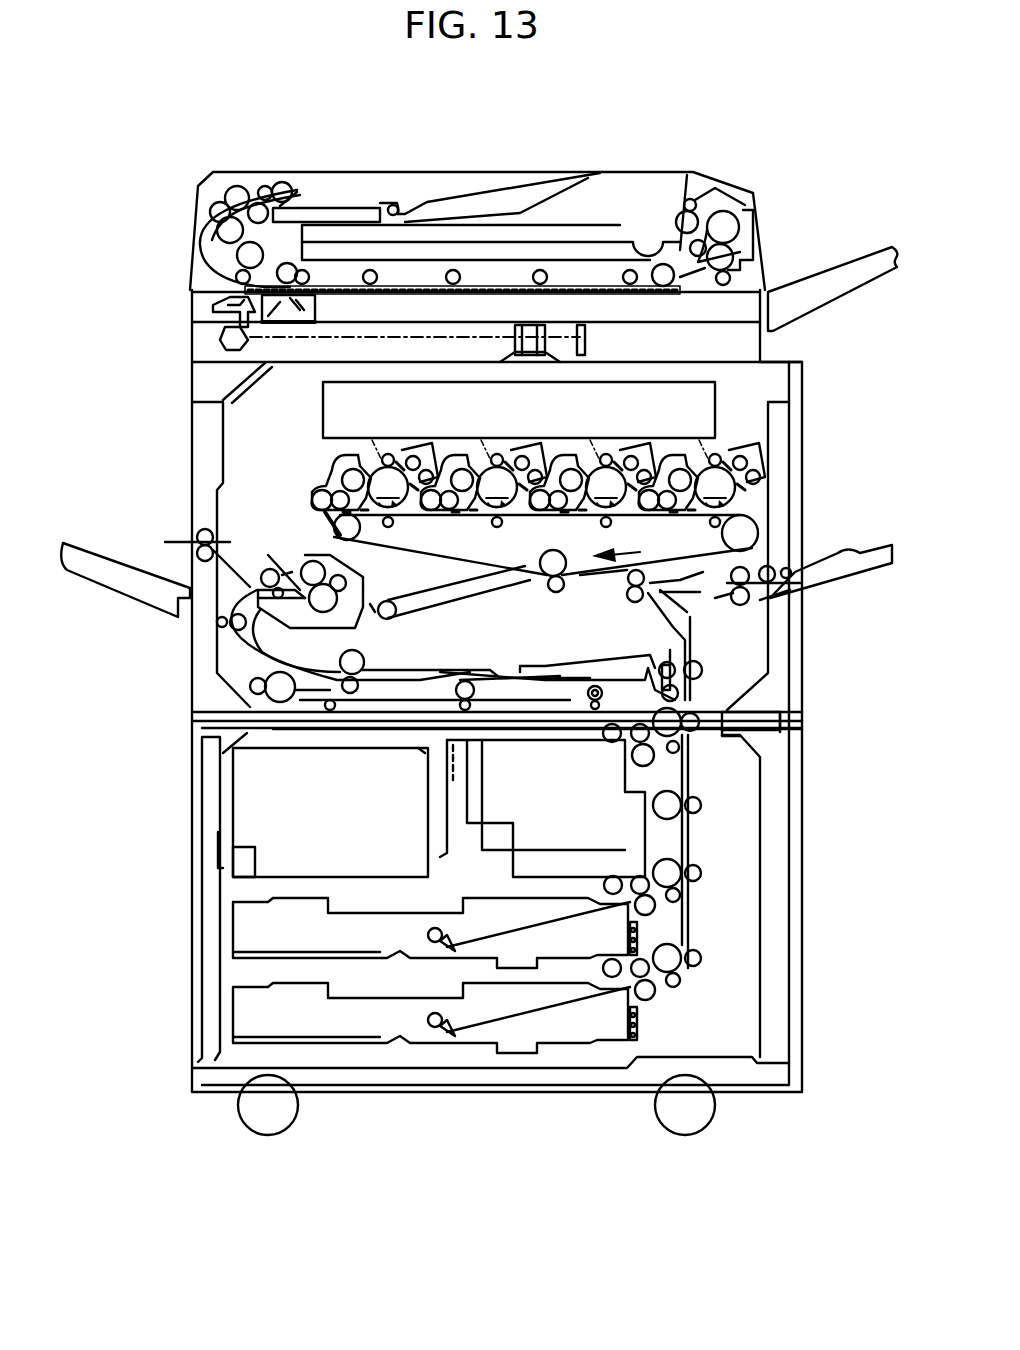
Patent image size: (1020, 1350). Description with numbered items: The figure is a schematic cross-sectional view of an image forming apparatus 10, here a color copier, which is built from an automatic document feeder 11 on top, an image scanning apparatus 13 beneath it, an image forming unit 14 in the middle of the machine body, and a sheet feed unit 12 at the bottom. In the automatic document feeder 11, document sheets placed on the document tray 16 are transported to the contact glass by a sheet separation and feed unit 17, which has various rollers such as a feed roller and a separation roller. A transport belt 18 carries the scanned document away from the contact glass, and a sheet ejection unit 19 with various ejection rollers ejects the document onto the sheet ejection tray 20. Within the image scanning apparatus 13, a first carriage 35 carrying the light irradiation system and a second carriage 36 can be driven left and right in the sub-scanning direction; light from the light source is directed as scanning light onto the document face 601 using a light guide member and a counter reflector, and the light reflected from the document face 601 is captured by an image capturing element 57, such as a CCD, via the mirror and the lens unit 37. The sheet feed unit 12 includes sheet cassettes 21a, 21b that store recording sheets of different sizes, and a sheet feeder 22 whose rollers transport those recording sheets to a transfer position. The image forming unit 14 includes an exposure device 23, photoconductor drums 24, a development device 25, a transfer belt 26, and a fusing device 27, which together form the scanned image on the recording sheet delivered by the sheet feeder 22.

The image forming apparatus 10 is at (645, 138).
The automatic document feeder 11 is at (180, 222).
The sheet feed unit 12 is at (178, 892).
The image scanning apparatus 13 is at (180, 320).
The image forming unit 14 is at (178, 632).
The document tray 16 is at (440, 186).
The sheet separation and feed unit 17 is at (222, 190).
The transport belt 18 is at (503, 262).
The sheet ejection unit 19 is at (755, 232).
The sheet ejection tray 20 is at (628, 240).
The document face 601 is at (580, 288).
The first carriage 35 is at (320, 300).
The second carriage 36 is at (250, 340).
The lens unit 37 is at (513, 338).
The image capturing element 57 is at (590, 338).
The sheet feeder 22 is at (702, 858).
The exposure device 23 is at (322, 410).
The photoconductor drums 24 is at (523, 483).
The development device 25 is at (418, 452).
The transfer belt 26 is at (432, 560).
The fusing device 27 is at (290, 556).
The sheet cassette 21a is at (255, 958).
The sheet cassette 21b is at (330, 1043).